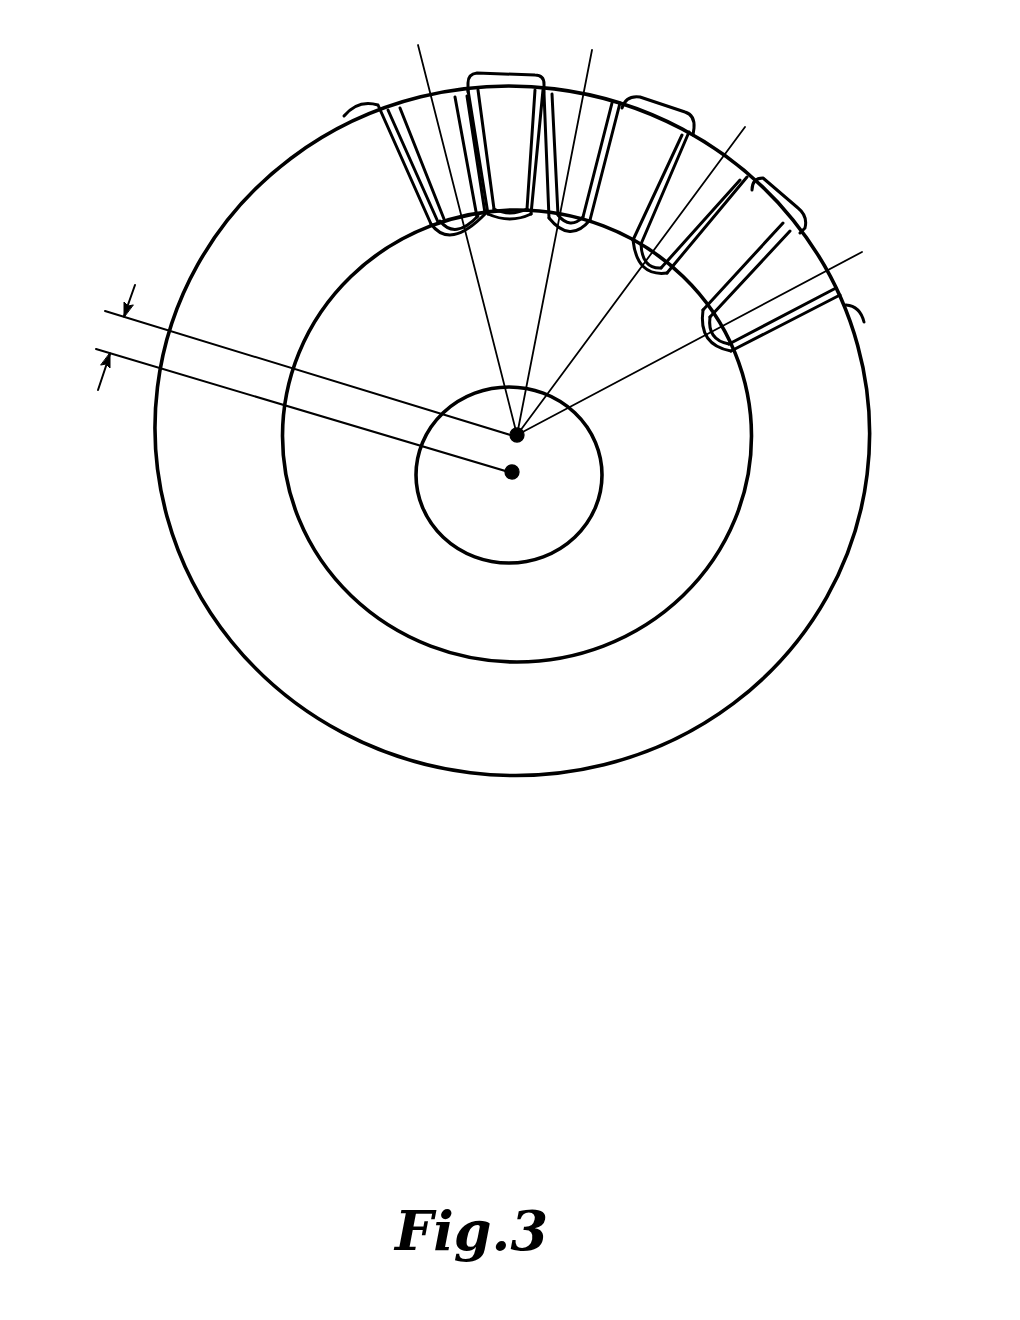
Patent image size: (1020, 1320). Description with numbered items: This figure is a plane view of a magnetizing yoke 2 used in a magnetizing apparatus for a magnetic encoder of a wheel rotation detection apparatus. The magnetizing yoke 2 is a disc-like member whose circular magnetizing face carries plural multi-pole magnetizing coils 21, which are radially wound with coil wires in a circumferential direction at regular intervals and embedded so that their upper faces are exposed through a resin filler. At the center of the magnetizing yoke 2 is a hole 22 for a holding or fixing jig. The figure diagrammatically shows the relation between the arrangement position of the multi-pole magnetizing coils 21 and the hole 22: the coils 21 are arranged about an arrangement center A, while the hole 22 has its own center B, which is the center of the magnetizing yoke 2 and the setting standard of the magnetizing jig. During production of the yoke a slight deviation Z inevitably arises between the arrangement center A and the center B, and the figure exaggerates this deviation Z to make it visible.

The magnetizing yoke 2 is at (460, 776).
The multi-pole magnetizing coil 21 is at (807, 267).
The hole for holding jig 22 is at (465, 533).
The arrangement center of the multi-pole magnetizing coil A is at (537, 440).
The center of the hole for the holding jig B is at (525, 482).
The deviation Z is at (108, 335).